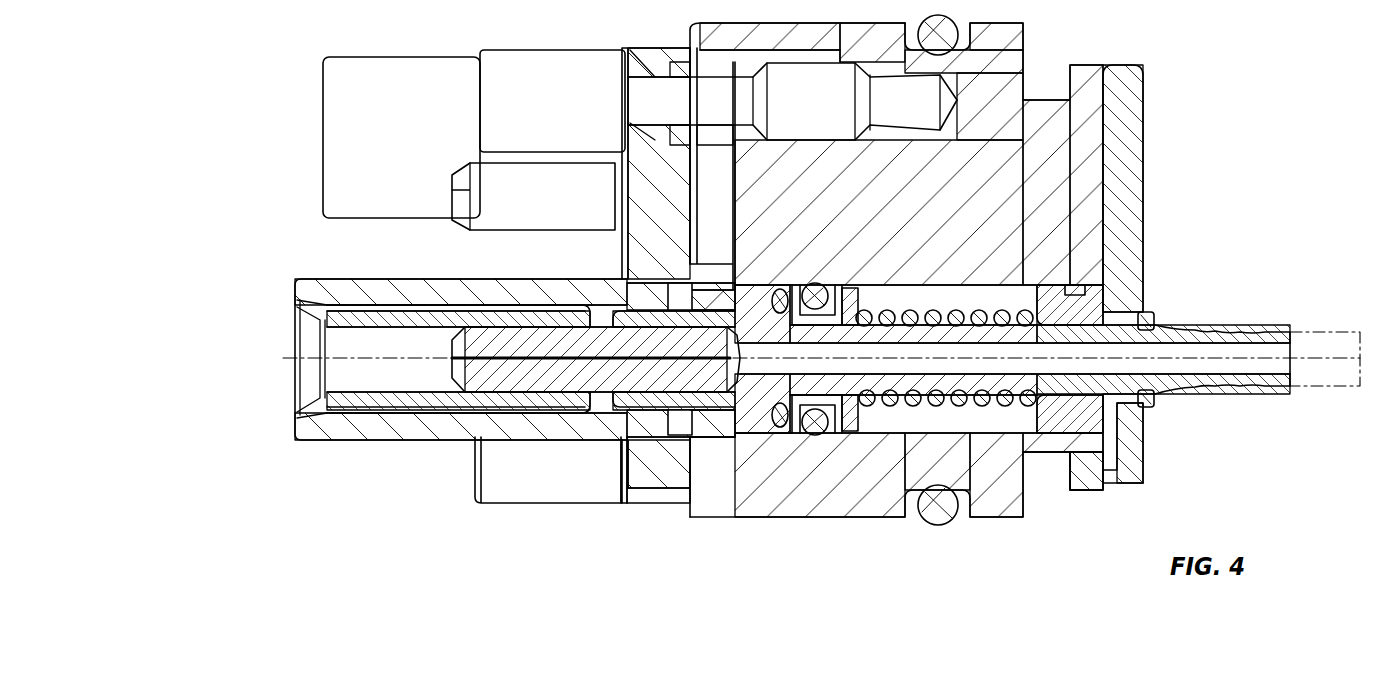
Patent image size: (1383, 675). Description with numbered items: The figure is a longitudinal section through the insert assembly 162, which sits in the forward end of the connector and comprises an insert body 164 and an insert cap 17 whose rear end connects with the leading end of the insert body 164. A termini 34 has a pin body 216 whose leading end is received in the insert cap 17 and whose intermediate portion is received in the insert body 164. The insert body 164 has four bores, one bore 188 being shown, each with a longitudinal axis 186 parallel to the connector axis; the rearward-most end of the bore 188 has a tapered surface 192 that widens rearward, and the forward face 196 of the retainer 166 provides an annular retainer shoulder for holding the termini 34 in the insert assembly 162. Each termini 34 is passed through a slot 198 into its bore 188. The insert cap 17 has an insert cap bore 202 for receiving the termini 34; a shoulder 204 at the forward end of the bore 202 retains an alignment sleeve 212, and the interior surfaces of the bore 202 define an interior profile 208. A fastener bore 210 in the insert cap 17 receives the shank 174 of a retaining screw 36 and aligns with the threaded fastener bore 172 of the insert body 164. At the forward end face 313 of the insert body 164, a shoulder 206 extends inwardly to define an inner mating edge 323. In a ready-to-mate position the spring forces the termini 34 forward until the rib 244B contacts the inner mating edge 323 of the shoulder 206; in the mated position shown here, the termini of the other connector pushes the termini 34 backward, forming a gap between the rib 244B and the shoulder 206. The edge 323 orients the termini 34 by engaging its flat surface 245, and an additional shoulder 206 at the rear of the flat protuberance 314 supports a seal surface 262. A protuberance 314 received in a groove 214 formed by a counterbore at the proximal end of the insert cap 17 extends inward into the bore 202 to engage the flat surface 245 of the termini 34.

The insert assembly 162 is at (200, 177).
The retaining screw 36 is at (520, 77).
The termini 34 is at (470, 232).
The shank 174 is at (652, 88).
The fastener bore 210 is at (690, 60).
The fastener bore 172 is at (747, 57).
The insert body bore 188 is at (963, 437).
The insert body 164 is at (717, 517).
The longitudinal axis 186 is at (295, 358).
The rib 244B is at (797, 430).
The seal surface 262 is at (818, 436).
The inner mating edge 323 is at (935, 318).
The pin body 216 is at (1080, 478).
The retainer 166 is at (1143, 172).
The tapered surface 192 is at (1148, 427).
The slot 198 is at (1152, 398).
The forward face 196 is at (1143, 290).
The insert cap 17 is at (397, 438).
The shoulder 204 is at (296, 434).
The alignment sleeve 212 is at (393, 305).
The interior profile 208 is at (342, 412).
The shoulder 206 is at (665, 290).
The forward end face 313 is at (717, 430).
The protuberance 314 is at (700, 470).
The insert cap bore 202 is at (510, 440).
The flat surface 245 is at (620, 447).
The groove 214 is at (617, 470).